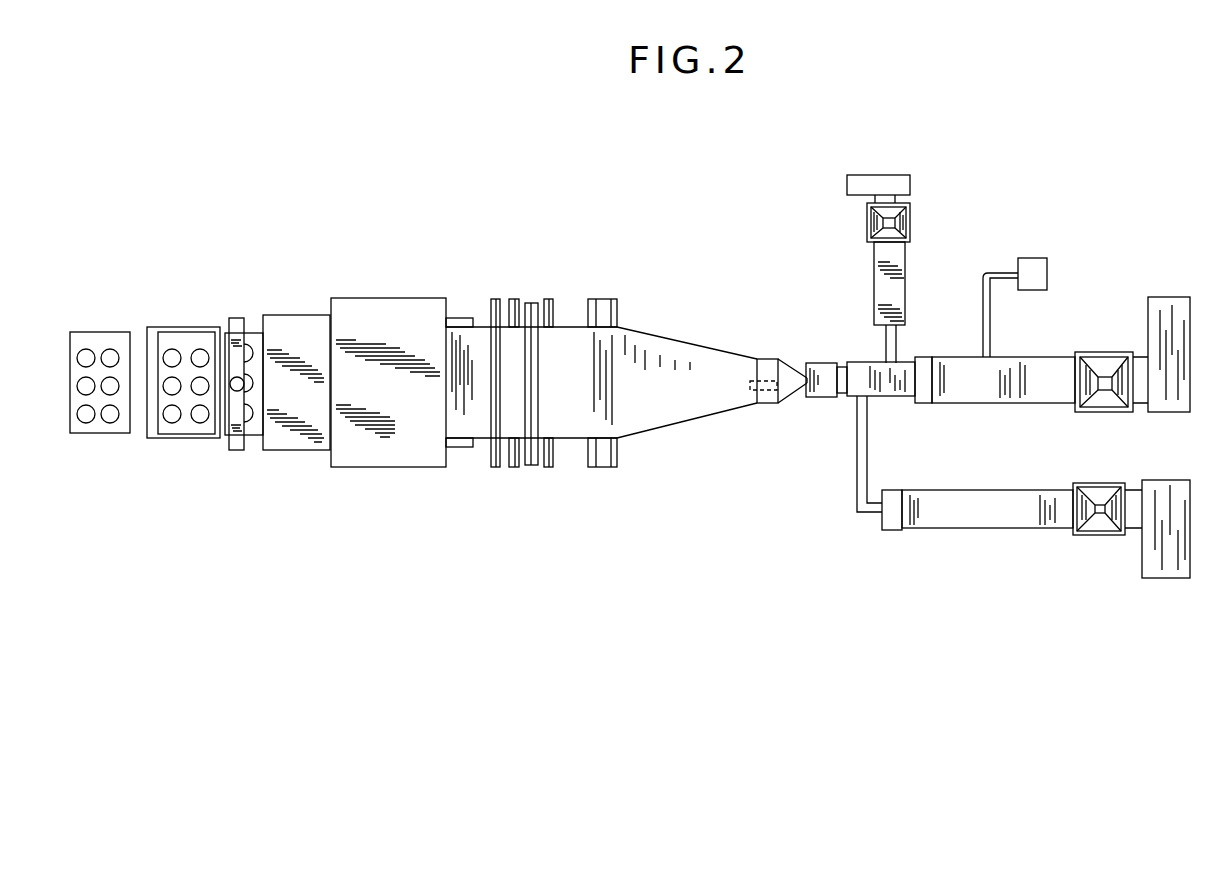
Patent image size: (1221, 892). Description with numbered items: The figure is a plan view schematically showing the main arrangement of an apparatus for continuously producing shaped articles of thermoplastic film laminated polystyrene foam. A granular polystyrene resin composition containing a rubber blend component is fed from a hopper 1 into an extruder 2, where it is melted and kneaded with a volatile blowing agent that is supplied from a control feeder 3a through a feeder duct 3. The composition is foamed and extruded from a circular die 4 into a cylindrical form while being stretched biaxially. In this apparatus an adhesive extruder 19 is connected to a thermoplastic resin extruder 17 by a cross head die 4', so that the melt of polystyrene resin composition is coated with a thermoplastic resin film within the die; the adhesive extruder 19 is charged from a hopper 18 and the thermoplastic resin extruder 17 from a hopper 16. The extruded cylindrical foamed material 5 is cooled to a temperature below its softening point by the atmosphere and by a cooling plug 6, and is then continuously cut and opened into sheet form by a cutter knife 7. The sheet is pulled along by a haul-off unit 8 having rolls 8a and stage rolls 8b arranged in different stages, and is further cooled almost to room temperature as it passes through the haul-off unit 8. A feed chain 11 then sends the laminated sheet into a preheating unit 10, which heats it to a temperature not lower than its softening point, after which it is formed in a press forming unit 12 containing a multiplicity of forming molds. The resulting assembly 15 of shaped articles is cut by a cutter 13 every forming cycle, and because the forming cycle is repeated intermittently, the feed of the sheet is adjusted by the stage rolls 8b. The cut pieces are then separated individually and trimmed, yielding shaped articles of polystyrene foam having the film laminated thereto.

The hopper 1 is at (1108, 355).
The extruder 2 is at (1040, 360).
The feeder duct 3 is at (998, 272).
The control feeder 3a is at (1032, 262).
The circular die 4 is at (826, 361).
The cross head die 4' is at (881, 408).
The cylindrical foamed material 5 is at (793, 362).
The cooling plug 6 is at (767, 405).
The cutter knife 7 is at (757, 392).
The haul-off unit 8 is at (615, 285).
The rolls 8a is at (595, 468).
The stage rolls 8b is at (553, 478).
The preheating unit 10 is at (385, 308).
The feed chain 11 is at (460, 318).
The press forming unit 12 is at (300, 320).
The cutter 13 is at (240, 325).
The assembly of shaped articles 15 is at (185, 338).
The hopper 16 is at (1100, 485).
The thermoplastic resin extruder 17 is at (992, 530).
The hopper 18 is at (868, 227).
The adhesive extruder 19 is at (880, 280).